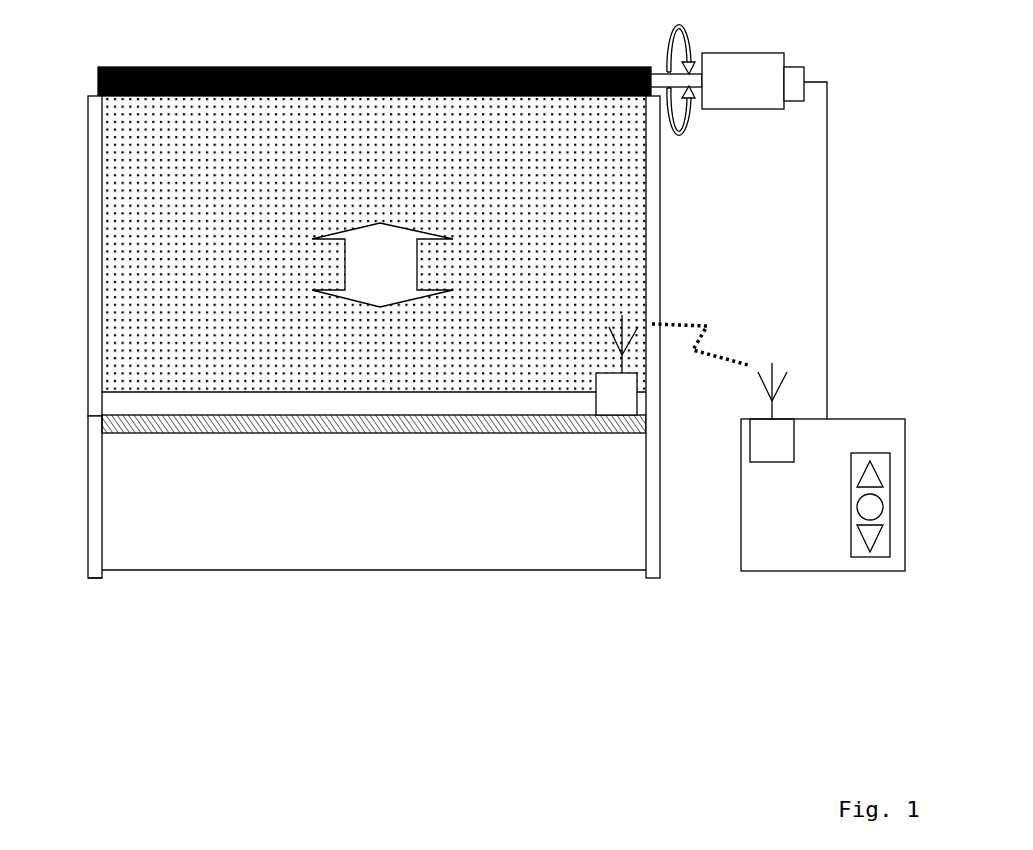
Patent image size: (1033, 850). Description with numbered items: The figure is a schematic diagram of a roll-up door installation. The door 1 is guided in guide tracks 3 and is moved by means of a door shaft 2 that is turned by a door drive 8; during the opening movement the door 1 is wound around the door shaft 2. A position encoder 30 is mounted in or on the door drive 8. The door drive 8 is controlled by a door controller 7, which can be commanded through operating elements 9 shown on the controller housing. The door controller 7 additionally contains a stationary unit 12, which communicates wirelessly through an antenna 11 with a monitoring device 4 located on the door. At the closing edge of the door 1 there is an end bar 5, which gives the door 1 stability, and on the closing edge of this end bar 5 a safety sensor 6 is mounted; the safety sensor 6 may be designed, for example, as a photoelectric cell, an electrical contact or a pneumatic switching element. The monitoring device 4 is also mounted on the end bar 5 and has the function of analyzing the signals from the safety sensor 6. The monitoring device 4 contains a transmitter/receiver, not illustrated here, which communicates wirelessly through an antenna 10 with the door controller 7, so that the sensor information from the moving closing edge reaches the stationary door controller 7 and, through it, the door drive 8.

The door 1 is at (637, 172).
The door shaft 2 is at (452, 68).
The guide tracks 3 is at (100, 548).
The monitoring device 4 is at (638, 379).
The end bar 5 is at (88, 375).
The safety sensor 6 is at (88, 440).
The door controller 7 is at (862, 433).
The door drive 8 is at (735, 57).
The operating elements 9 is at (860, 550).
The antenna 10 is at (623, 303).
The antenna 11 is at (776, 358).
The stationary unit 12 is at (762, 445).
The position encoder 30 is at (795, 80).